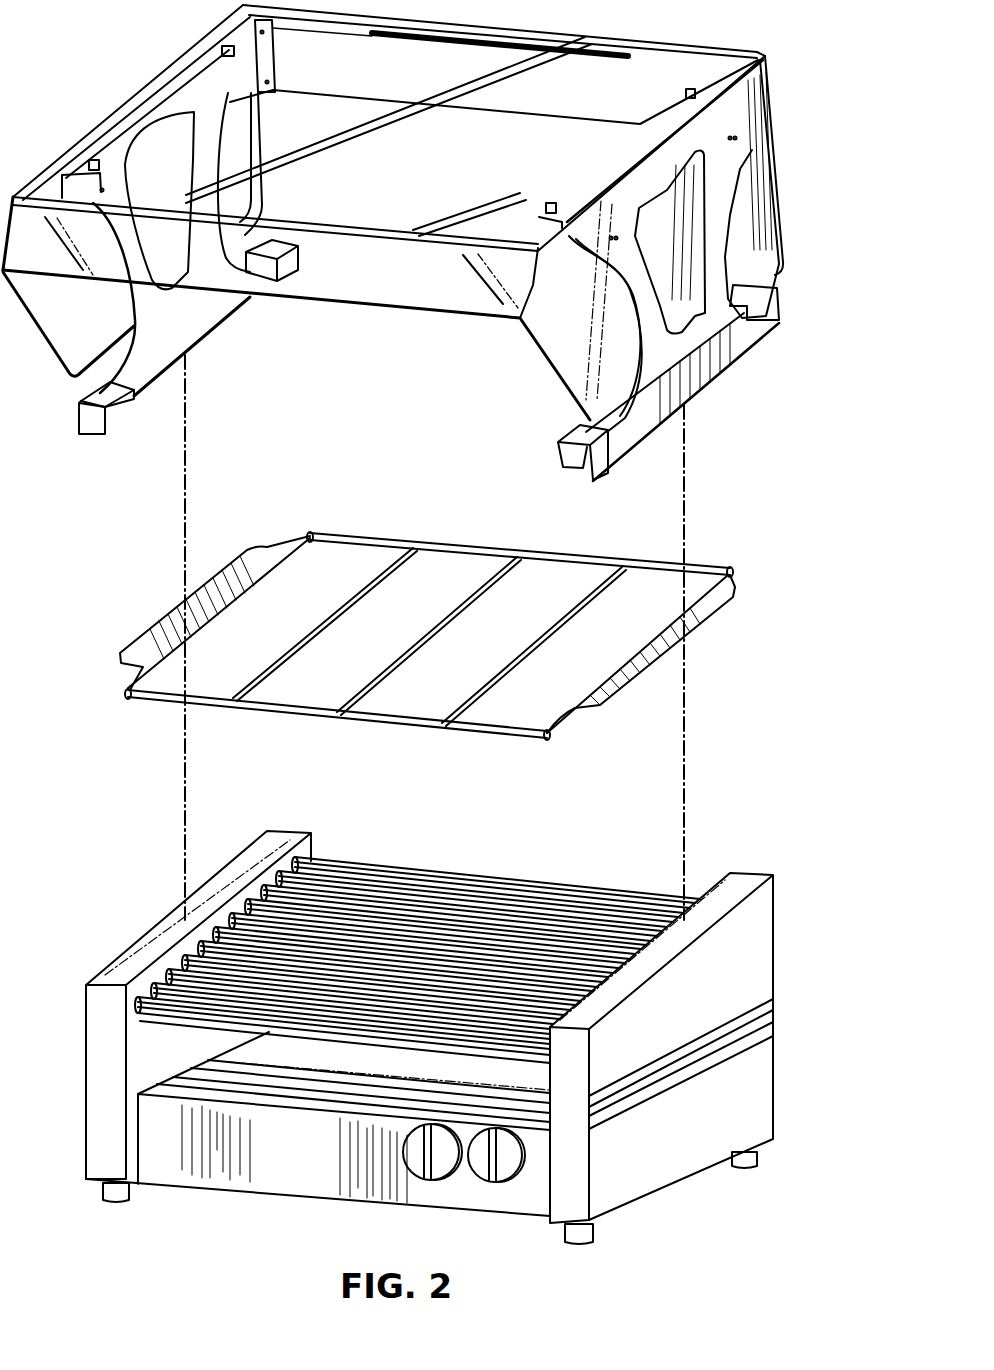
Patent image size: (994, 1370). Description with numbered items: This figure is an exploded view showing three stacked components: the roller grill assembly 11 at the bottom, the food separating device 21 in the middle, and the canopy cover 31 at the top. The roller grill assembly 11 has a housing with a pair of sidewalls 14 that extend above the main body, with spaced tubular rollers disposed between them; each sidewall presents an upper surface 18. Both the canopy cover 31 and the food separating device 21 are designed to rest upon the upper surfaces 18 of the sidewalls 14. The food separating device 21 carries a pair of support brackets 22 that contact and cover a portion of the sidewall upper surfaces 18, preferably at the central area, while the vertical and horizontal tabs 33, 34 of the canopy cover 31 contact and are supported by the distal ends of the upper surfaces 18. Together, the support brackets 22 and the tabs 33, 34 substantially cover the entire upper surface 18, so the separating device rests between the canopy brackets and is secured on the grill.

The roller grill assembly 11 is at (480, 1020).
The sidewalls 14 is at (732, 1079).
The upper surfaces 18 is at (753, 880).
The food separating device 21 is at (469, 636).
The support brackets 22 is at (150, 637).
The canopy cover 31 is at (798, 151).
The vertical tab 33 is at (97, 415).
The horizontal tab 34 is at (124, 391).